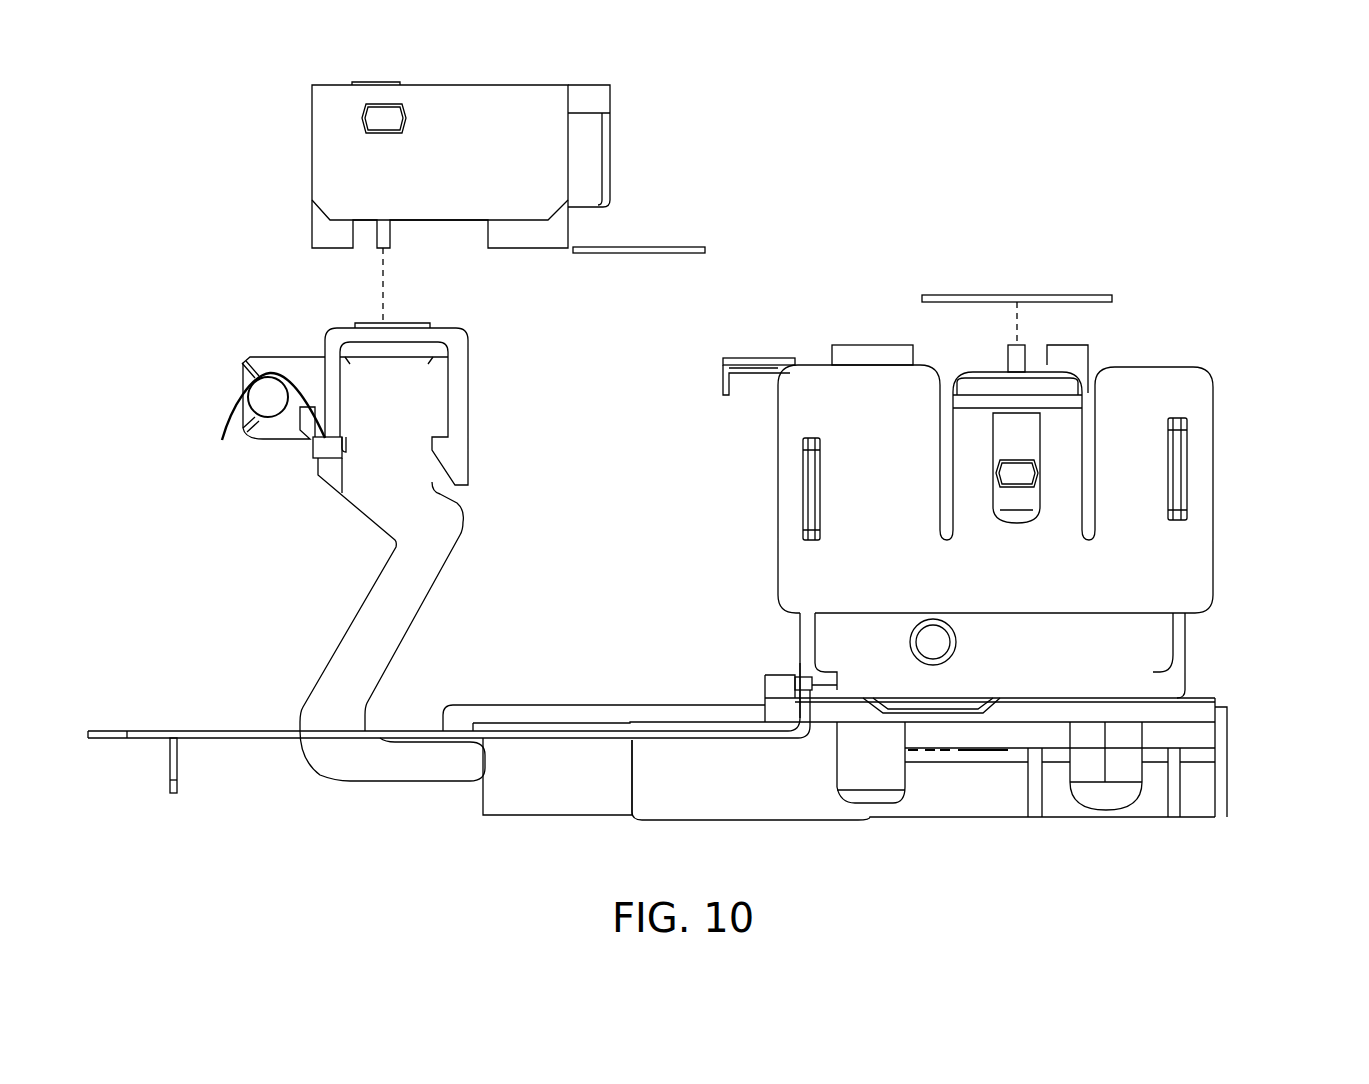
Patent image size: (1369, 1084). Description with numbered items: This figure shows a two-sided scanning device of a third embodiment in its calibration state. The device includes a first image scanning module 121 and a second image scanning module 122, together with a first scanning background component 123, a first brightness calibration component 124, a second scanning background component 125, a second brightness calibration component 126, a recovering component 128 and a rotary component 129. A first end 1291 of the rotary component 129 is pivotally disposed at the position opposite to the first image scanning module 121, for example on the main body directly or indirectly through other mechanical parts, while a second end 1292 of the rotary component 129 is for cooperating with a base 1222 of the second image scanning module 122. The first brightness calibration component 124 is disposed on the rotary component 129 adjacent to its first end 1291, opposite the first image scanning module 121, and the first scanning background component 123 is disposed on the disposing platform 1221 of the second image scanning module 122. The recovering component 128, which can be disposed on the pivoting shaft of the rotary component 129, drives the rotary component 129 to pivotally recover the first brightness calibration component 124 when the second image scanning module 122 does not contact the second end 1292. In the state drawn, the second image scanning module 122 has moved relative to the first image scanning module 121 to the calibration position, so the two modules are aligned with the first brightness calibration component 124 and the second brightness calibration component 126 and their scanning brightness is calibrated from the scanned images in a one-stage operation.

The first image scanning module 121 is at (392, 232).
The second image scanning module 122 is at (1025, 345).
The first scanning background component 123 is at (770, 358).
The first brightness calibration component 124 is at (410, 323).
The second scanning background component 125 is at (650, 247).
The second brightness calibration component 126 is at (1000, 295).
The recovering component 128 is at (222, 432).
The rotary component 129 is at (390, 626).
The disposing platform 1221 is at (748, 395).
The base 1222 is at (537, 795).
The first end 1291 is at (278, 360).
The second end 1292 is at (440, 770).